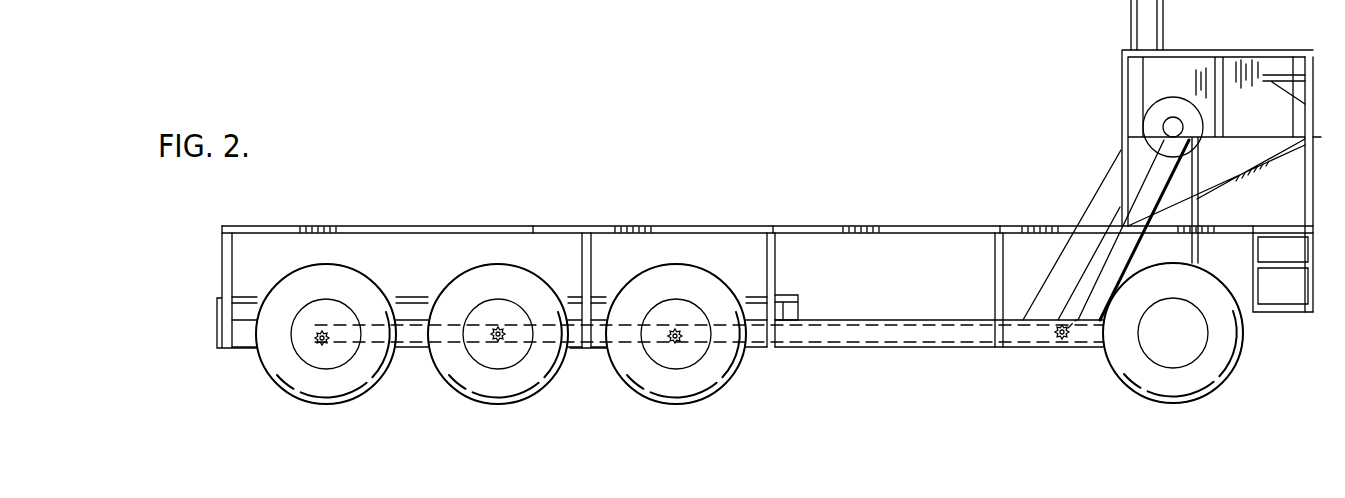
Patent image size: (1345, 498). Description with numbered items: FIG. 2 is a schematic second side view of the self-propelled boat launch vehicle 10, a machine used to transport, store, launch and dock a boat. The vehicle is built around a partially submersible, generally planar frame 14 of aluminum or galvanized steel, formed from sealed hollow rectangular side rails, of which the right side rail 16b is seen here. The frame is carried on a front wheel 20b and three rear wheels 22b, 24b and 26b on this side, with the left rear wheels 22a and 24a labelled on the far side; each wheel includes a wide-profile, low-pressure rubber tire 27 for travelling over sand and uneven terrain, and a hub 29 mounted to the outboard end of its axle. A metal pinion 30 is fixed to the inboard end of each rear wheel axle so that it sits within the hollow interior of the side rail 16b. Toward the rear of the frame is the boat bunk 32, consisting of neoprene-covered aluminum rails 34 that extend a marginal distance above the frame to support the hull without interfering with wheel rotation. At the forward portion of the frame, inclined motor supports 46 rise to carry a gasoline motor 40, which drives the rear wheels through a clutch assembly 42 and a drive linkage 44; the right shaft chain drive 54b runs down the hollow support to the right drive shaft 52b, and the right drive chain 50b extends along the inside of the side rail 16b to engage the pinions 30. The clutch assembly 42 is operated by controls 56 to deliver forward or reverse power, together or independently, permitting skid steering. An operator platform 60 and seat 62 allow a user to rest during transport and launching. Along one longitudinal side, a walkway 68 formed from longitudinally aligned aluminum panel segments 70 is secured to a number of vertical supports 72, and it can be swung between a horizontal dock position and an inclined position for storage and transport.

The boat launch vehicle 10 is at (732, 226).
The frame 14 is at (667, 339).
The right side rail 16b is at (843, 348).
The right front wheel 20b is at (1205, 363).
The left rear wheel 22a is at (854, 12).
The right rear wheel 22b is at (696, 374).
The left rear wheel 24a is at (1006, 13).
The right rear wheel 24b is at (514, 376).
The right rear wheel 26b is at (341, 379).
The rubber tire 27 is at (345, 277).
The hub 29 is at (310, 313).
The pinion 30 is at (315, 343).
The boat bunk 32 is at (806, 298).
The bunk rails 34 is at (413, 300).
The motor 40 is at (1265, 121).
The clutch assembly 42 is at (1188, 92).
The drive linkage 44 is at (1113, 212).
The motor supports 46 is at (1113, 160).
The right drive chain 50b is at (927, 347).
The right drive shaft 52b is at (1062, 350).
The right shaft chain drive 54b is at (1097, 245).
The controls 56 is at (1131, 13).
The operator platform 60 is at (1232, 227).
The seat 62 is at (1283, 72).
The walkway 68 is at (833, 224).
The panel segments 70 is at (557, 226).
The vertical supports 72 is at (222, 252).